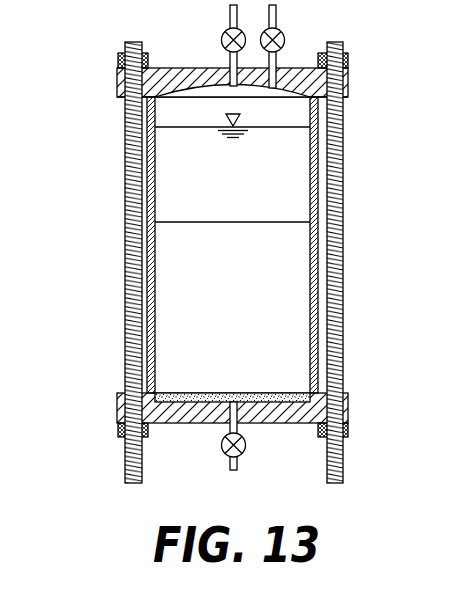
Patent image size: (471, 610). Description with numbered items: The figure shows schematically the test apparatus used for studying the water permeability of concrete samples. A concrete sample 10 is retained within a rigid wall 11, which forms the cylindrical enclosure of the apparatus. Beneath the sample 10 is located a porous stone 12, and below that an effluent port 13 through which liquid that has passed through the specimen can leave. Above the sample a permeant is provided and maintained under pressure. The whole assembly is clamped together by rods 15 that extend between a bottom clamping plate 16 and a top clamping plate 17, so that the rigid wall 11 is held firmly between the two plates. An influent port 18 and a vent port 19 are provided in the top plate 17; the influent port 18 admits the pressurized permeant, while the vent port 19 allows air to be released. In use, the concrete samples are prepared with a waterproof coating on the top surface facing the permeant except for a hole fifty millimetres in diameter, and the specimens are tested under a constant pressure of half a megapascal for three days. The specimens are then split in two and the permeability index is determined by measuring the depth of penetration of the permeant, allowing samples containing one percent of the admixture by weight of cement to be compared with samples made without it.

The concrete sample 10 is at (282, 267).
The rigid wall 11 is at (318, 174).
The porous stone 12 is at (273, 393).
The effluent port 13 is at (229, 461).
The rods 15 is at (125, 248).
The bottom clamping plate 16 is at (117, 408).
The top clamping plate 17 is at (117, 81).
The influent port 18 is at (287, 36).
The vent port 19 is at (222, 33).